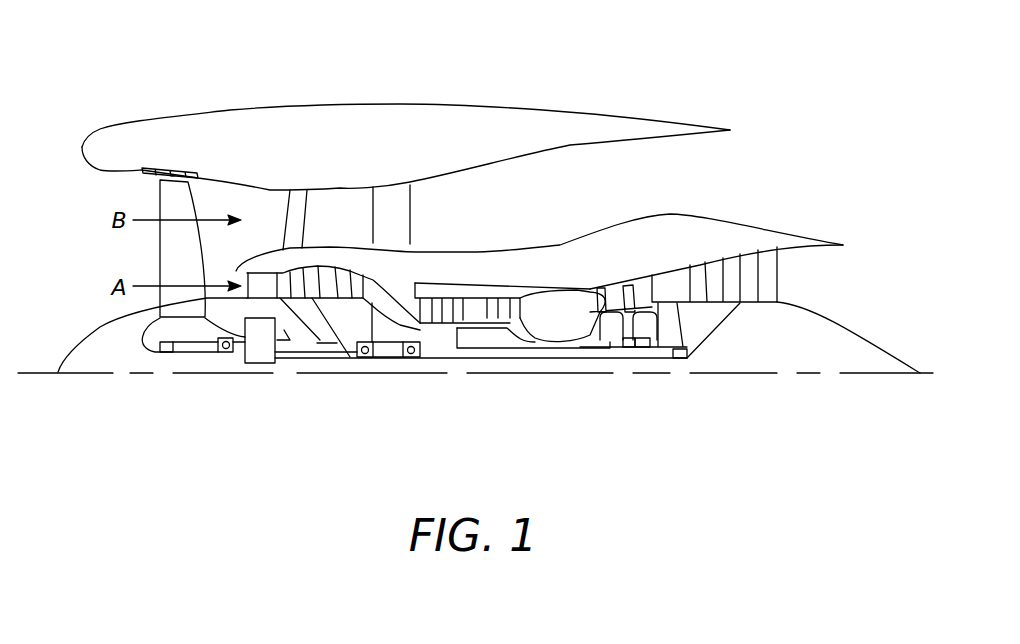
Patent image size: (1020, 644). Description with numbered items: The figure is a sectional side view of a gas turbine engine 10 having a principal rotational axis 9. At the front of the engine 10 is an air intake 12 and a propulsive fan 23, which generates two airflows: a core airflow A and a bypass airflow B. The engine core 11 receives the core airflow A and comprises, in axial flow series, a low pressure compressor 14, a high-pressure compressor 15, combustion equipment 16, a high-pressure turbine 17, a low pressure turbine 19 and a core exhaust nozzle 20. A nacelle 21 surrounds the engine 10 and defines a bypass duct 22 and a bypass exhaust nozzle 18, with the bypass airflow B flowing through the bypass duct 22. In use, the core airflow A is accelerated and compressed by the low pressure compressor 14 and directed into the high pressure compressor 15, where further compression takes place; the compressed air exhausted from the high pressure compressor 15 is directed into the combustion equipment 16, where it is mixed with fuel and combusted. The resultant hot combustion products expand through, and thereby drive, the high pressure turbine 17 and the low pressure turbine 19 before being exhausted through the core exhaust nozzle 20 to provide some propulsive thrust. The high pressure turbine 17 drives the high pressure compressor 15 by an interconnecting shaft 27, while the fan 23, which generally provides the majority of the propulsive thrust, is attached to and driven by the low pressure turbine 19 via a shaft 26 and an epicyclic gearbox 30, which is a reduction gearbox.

The principal rotational axis 9 is at (785, 375).
The gas turbine engine 10 is at (157, 121).
The engine core 11 is at (518, 273).
The air intake 12 is at (113, 197).
The low pressure compressor 14 is at (330, 277).
The high pressure compressor 15 is at (477, 310).
The combustion equipment 16 is at (550, 310).
The high pressure turbine 17 is at (613, 293).
The bypass exhaust nozzle 18 is at (719, 170).
The low pressure turbine 19 is at (748, 262).
The core exhaust nozzle 20 is at (805, 277).
The nacelle 21 is at (386, 118).
The bypass duct 22 is at (677, 187).
The propulsive fan 23 is at (163, 252).
The shaft 26 is at (467, 360).
The interconnecting shaft 27 is at (510, 348).
The epicyclic gearbox 30 is at (257, 353).